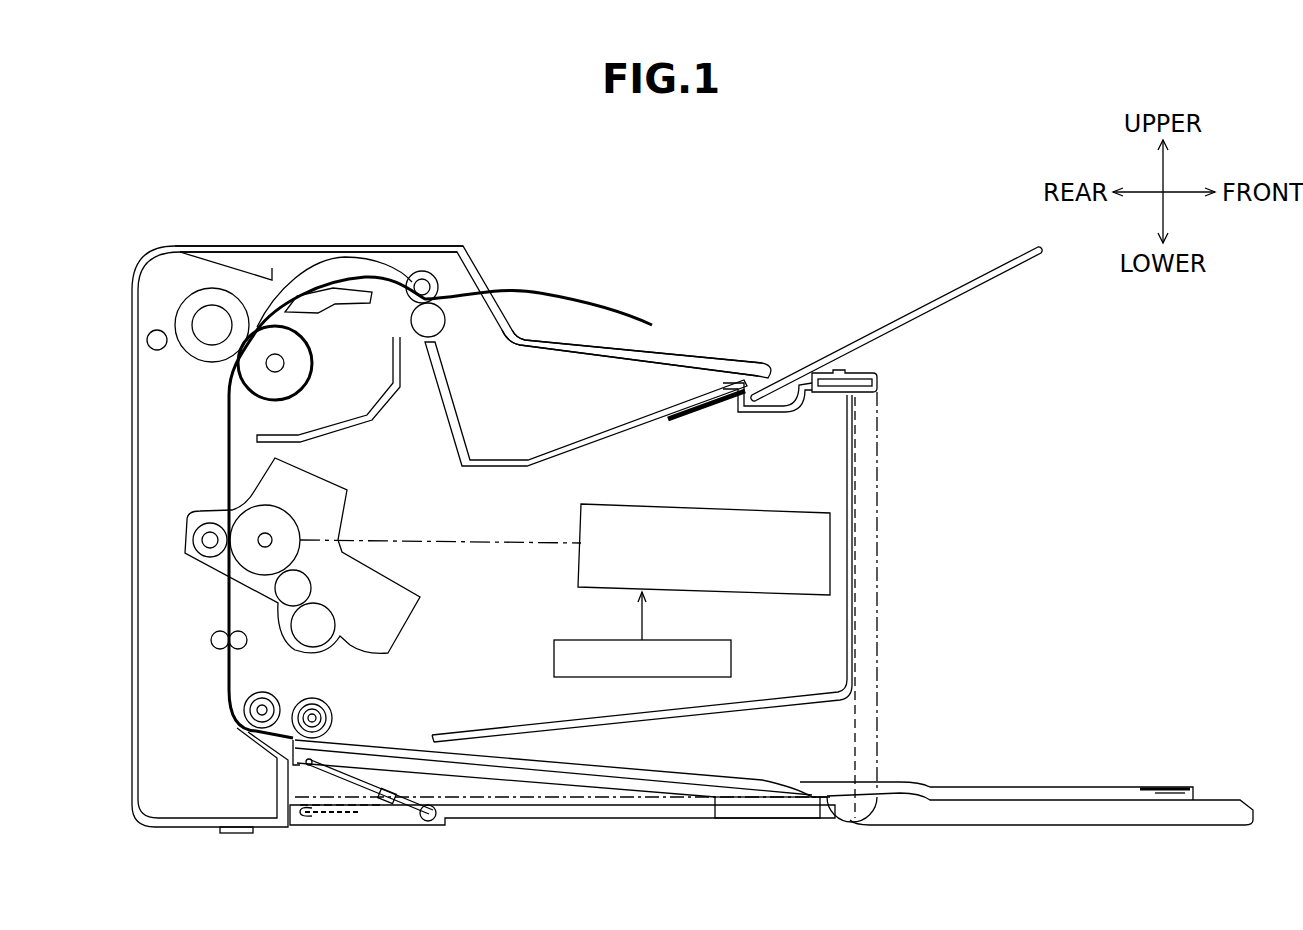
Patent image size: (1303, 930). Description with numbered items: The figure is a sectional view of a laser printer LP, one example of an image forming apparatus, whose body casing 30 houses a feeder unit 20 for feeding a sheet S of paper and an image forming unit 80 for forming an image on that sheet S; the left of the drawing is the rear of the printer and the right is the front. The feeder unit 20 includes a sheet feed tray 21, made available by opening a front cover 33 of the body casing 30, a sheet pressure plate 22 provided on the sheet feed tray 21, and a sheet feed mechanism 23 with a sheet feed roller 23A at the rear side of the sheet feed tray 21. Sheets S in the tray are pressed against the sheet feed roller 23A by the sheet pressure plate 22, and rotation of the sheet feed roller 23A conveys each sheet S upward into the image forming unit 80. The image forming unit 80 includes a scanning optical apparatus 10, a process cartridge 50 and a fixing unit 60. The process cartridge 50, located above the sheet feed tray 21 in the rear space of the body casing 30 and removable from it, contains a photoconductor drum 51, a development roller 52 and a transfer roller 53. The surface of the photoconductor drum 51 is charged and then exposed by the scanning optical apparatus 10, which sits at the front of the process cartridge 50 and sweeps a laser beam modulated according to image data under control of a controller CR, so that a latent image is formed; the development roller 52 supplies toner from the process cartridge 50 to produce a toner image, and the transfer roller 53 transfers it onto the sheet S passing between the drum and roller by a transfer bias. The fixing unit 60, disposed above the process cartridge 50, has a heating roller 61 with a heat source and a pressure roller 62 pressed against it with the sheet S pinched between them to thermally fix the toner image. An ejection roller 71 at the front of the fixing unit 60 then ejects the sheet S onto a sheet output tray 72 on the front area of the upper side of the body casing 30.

The scanning optical apparatus 10 is at (737, 504).
The feeder unit 20 is at (666, 746).
The sheet feed tray 21 is at (800, 767).
The sheet pressure plate 22 is at (508, 787).
The sheet feed mechanism 23 is at (210, 770).
The sheet feed roller 23A is at (332, 712).
The body casing 30 is at (243, 243).
The front cover 33 is at (877, 540).
The process cartridge 50 is at (279, 563).
The photoconductor drum 51 is at (292, 506).
The development roller 52 is at (284, 630).
The transfer roller 53 is at (193, 528).
The fixing unit 60 is at (213, 309).
The heating roller 61 is at (312, 375).
The pressure roller 62 is at (183, 308).
The ejection roller 71 is at (402, 268).
The sheet output tray 72 is at (658, 412).
The image forming unit 80 is at (787, 472).
The laser printer LP is at (790, 210).
The sheet S is at (728, 778).
The controller CR is at (731, 656).